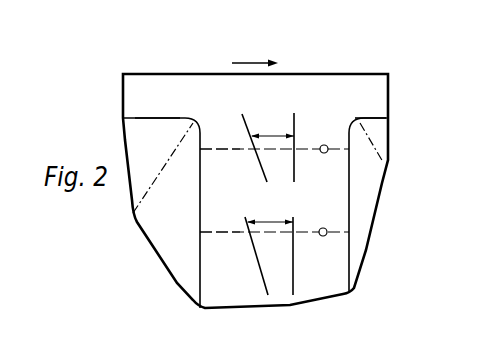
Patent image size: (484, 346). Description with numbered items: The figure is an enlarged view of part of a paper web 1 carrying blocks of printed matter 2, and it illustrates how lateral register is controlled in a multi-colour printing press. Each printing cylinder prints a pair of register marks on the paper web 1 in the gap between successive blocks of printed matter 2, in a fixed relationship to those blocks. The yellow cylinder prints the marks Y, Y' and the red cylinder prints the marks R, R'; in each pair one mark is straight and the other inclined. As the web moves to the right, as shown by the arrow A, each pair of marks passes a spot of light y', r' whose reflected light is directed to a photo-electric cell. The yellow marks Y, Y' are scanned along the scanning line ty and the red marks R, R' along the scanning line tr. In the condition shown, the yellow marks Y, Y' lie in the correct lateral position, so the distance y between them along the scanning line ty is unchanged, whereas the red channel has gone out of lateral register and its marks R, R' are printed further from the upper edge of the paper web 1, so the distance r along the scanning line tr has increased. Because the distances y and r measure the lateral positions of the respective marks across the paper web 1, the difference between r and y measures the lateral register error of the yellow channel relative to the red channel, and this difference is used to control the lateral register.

The paper web 1 is at (327, 74).
The blocks of printed matter 2 is at (148, 118).
The arrows A is at (256, 63).
The yellow register mark Y is at (303, 137).
The yellow register mark Y' is at (254, 139).
The distance between yellow marks y is at (272, 136).
The spot of light y' is at (274, 136).
The scanning line ty is at (232, 147).
The red register mark R is at (305, 256).
The red register mark R' is at (247, 256).
The distance between red marks r is at (270, 222).
The spot of light r' is at (274, 220).
The scanning line tr is at (232, 230).